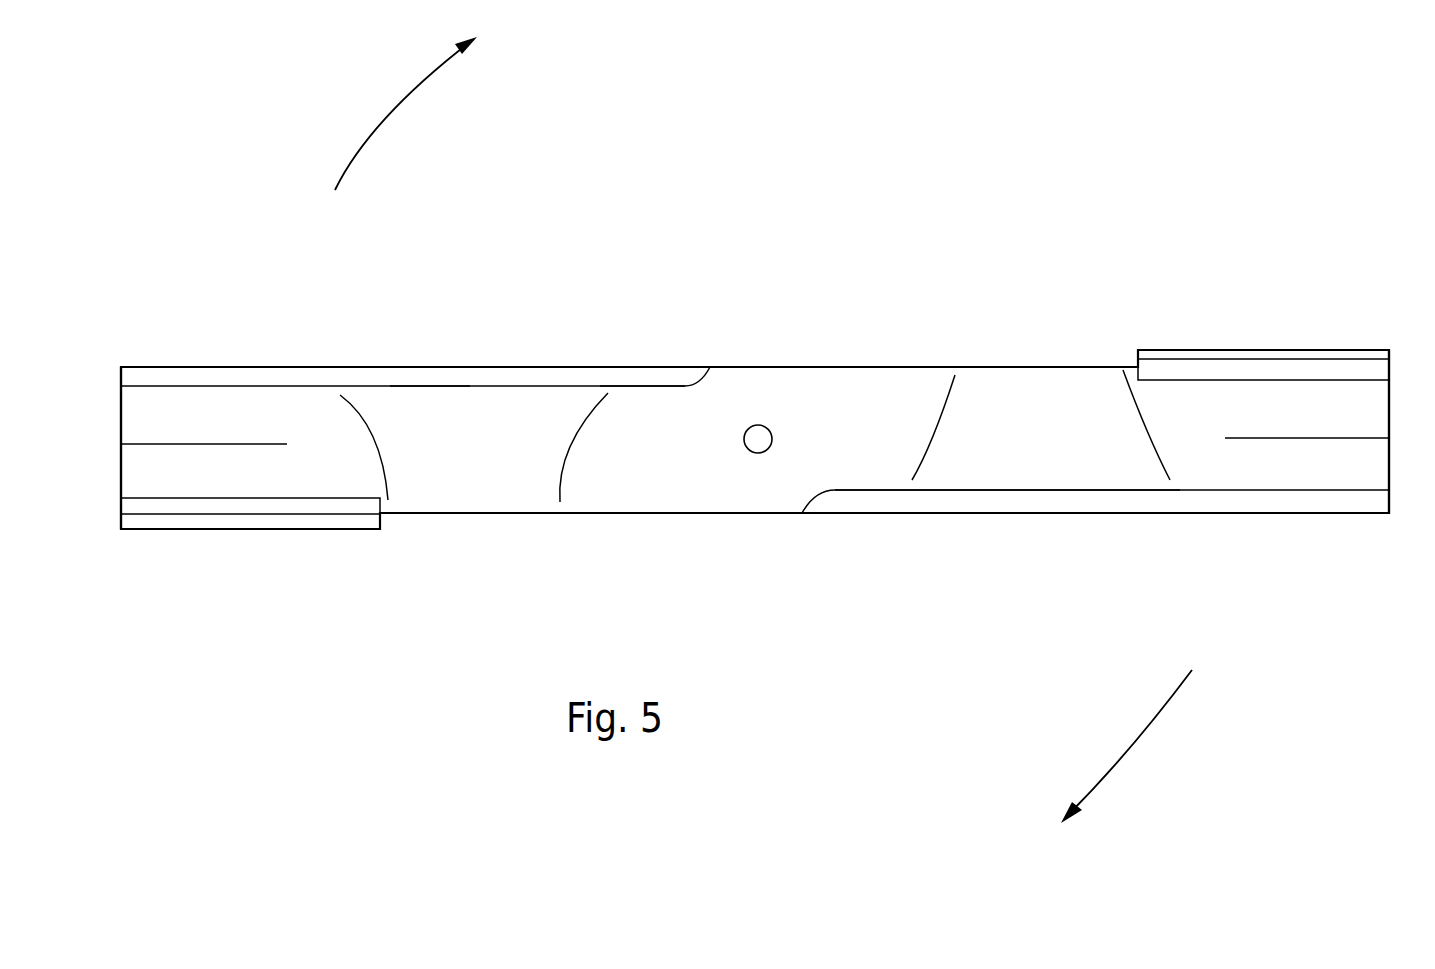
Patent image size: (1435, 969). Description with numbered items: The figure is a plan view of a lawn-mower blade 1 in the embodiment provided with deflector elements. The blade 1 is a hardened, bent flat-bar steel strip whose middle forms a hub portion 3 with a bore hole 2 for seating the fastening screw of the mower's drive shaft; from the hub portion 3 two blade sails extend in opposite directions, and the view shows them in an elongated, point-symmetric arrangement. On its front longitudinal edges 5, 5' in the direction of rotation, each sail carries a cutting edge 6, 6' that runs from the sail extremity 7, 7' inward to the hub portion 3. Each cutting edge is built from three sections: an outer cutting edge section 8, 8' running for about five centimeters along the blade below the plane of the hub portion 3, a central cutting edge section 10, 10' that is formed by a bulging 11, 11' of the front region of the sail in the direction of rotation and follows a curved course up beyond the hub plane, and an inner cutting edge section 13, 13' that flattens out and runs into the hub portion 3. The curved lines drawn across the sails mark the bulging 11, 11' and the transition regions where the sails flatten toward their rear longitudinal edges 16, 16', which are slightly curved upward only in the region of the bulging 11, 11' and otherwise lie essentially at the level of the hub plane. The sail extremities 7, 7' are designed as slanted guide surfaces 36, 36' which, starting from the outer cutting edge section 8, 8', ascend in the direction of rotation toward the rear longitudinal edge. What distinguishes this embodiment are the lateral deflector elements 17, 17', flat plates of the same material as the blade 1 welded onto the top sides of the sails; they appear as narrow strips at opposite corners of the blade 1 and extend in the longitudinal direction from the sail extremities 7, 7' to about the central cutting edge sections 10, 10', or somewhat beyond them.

The blade 1 is at (822, 325).
The bore hole 2 is at (753, 453).
The hub portion 3 is at (695, 500).
The front longitudinal edge 5 is at (1240, 559).
The front longitudinal edge 5' is at (325, 326).
The cutting edge 6 is at (1120, 540).
The cutting edge 6' is at (500, 326).
The sail extremity 7 is at (1405, 469).
The sail extremity 7' is at (114, 407).
The outer cutting edge section 8 is at (1095, 540).
The outer cutting edge section 8' is at (415, 336).
The central cutting edge section 10 is at (1010, 540).
The central cutting edge section 10' is at (430, 336).
The bulging 11 is at (951, 383).
The bulging 11' is at (390, 493).
The inner cutting edge section 13 is at (897, 540).
The inner cutting edge section 13' is at (642, 336).
The rear longitudinal edge 16 is at (1120, 383).
The rear longitudinal edge 16' is at (548, 492).
The lateral deflector element 17 is at (1291, 362).
The lateral deflector element 17' is at (214, 524).
The slanted guide surface 36 is at (1263, 333).
The slanted guide surface 36' is at (250, 566).